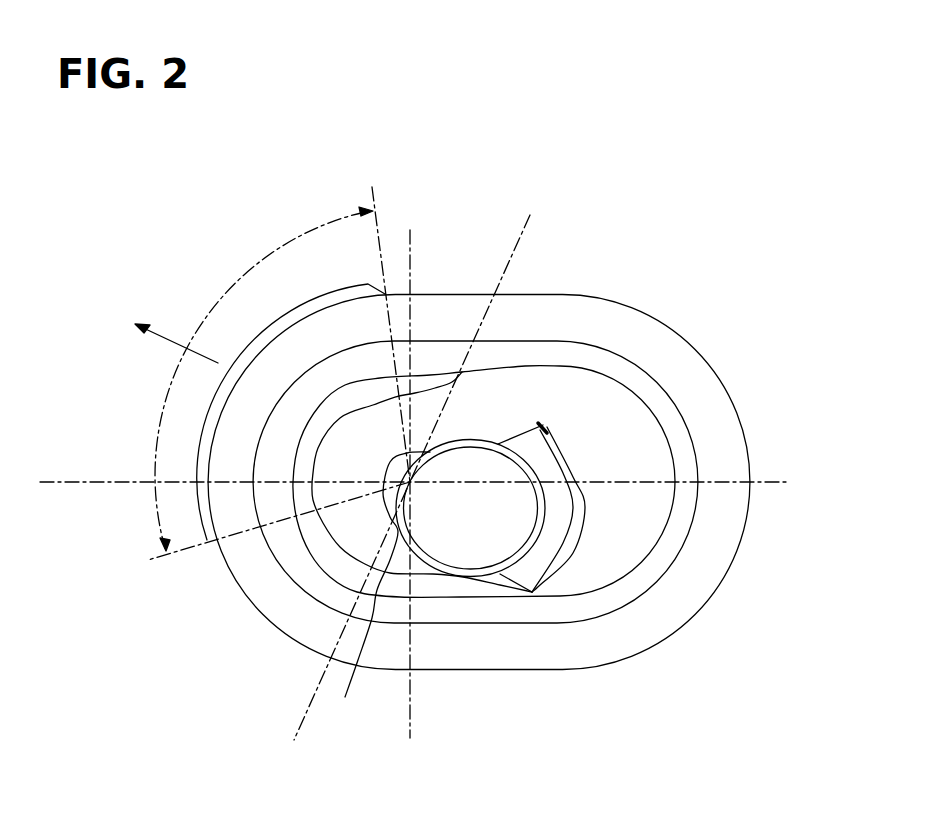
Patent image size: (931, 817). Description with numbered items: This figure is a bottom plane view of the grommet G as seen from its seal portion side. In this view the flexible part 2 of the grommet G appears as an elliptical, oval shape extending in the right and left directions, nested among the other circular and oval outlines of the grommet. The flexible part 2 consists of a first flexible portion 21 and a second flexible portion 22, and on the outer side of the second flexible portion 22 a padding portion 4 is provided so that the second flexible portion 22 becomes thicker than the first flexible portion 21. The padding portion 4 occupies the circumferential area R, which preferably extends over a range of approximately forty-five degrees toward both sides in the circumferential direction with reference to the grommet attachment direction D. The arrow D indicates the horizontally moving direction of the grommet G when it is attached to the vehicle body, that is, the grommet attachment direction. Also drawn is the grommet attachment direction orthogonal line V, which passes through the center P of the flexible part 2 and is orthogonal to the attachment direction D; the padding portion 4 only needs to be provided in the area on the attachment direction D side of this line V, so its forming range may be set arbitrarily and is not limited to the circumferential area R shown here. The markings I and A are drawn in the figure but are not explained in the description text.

The flexible part 2 is at (391, 518).
The first flexible portion 21 is at (318, 583).
The second flexible portion 22 is at (250, 563).
The padding portion 4 is at (277, 315).
The grommet G is at (683, 338).
The circumferential area R is at (155, 434).
The grommet attachment direction D is at (165, 350).
The grommet attachment direction orthogonal line V is at (505, 264).
The inclined reference line I is at (379, 455).
The center P is at (412, 486).
The axis line A is at (65, 484).